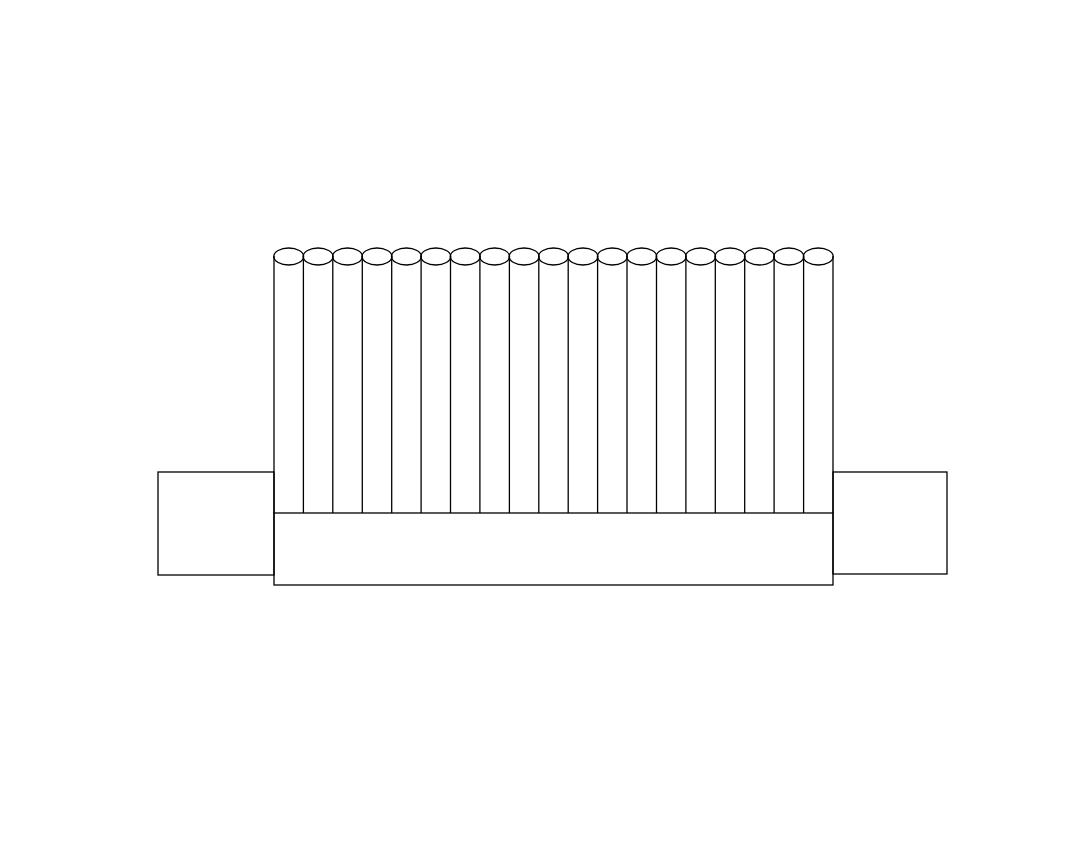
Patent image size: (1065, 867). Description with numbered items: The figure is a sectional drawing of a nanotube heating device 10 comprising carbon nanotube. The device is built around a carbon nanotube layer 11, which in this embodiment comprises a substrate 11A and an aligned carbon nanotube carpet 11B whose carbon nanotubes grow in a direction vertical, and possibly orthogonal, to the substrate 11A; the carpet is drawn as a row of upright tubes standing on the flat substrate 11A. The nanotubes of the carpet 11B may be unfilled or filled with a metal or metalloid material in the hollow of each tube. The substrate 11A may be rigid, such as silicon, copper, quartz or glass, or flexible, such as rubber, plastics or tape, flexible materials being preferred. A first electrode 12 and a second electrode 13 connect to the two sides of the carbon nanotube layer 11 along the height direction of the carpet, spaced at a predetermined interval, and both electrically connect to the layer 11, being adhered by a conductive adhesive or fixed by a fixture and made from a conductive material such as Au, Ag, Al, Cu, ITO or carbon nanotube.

The nanotube heating device 10 is at (76, 72).
The carbon nanotube layer 11 is at (770, 161).
The substrate 11A is at (578, 565).
The aligned carbon nanotube carpet 11B is at (583, 252).
The first electrode 12 is at (920, 513).
The second electrode 13 is at (188, 522).